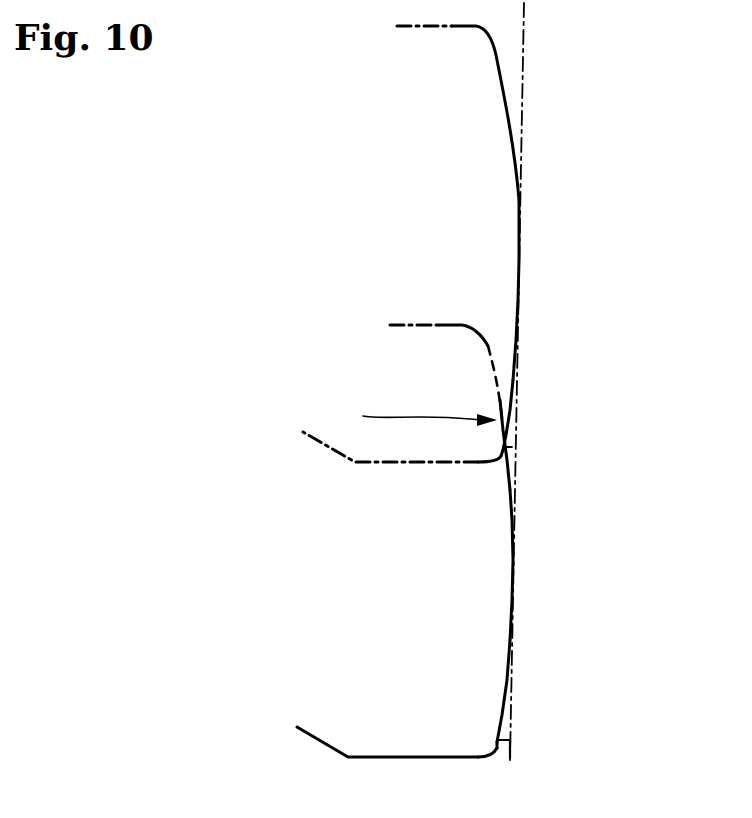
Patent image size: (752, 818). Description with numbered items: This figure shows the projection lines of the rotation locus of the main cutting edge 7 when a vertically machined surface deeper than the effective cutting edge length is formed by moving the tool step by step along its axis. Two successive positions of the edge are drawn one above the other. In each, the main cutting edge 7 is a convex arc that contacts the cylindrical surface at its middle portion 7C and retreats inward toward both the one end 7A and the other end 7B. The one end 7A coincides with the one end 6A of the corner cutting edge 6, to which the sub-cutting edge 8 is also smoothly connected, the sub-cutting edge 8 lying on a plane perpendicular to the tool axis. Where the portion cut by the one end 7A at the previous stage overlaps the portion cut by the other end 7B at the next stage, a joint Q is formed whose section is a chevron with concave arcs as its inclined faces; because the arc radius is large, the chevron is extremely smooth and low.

The corner cutting edge 6 is at (483, 463).
The one end of the corner cutting edge 6A is at (505, 449).
The main cutting edge 7 is at (512, 399).
The one end of the main cutting edge 7A is at (604, 591).
The other end of the main cutting edge 7B is at (492, 37).
The middle portion of the main cutting edge 7C is at (520, 258).
The sub-cutting edge 8 is at (405, 463).
The joint Q is at (416, 419).